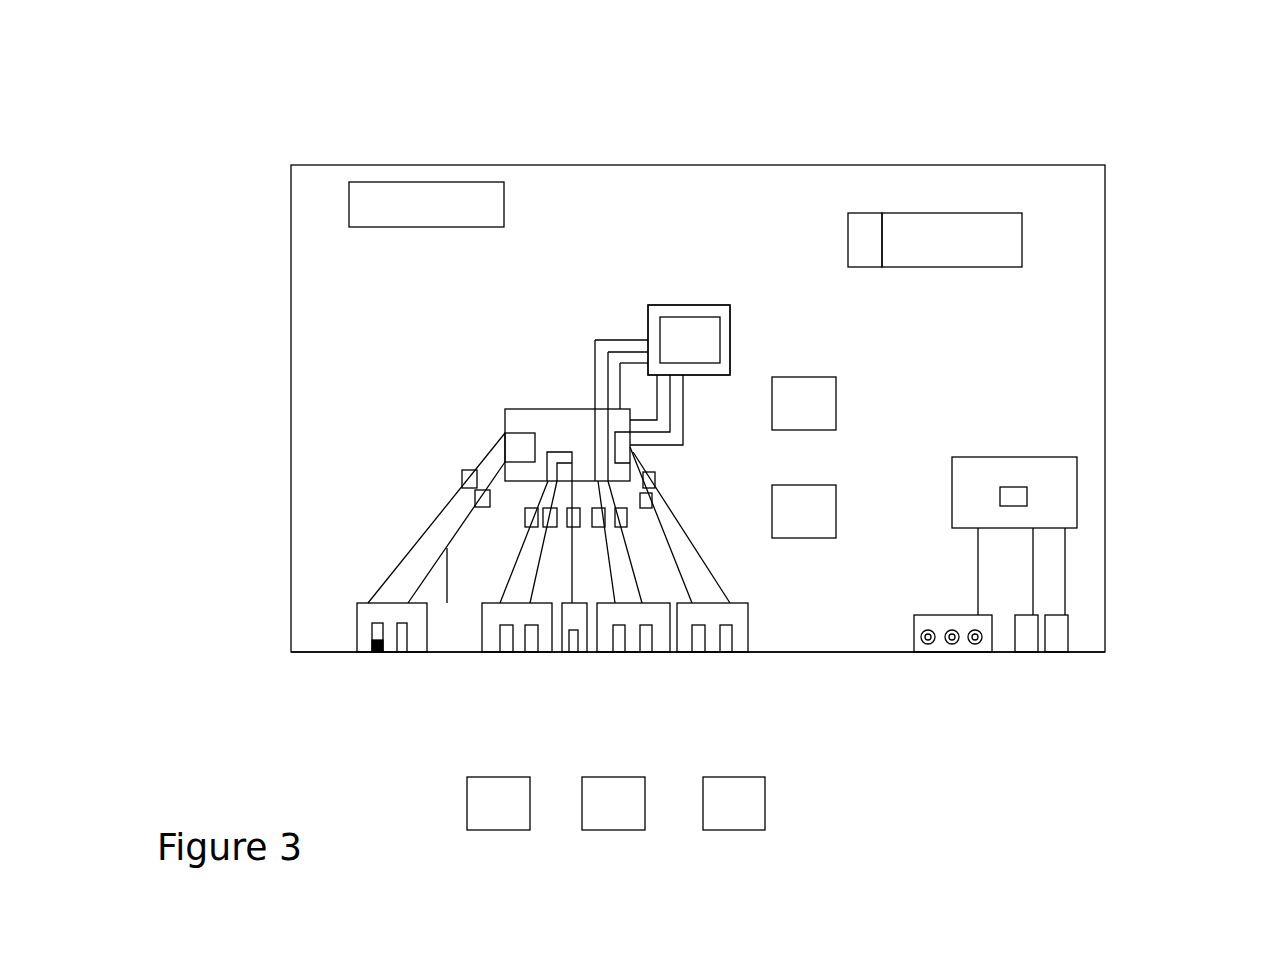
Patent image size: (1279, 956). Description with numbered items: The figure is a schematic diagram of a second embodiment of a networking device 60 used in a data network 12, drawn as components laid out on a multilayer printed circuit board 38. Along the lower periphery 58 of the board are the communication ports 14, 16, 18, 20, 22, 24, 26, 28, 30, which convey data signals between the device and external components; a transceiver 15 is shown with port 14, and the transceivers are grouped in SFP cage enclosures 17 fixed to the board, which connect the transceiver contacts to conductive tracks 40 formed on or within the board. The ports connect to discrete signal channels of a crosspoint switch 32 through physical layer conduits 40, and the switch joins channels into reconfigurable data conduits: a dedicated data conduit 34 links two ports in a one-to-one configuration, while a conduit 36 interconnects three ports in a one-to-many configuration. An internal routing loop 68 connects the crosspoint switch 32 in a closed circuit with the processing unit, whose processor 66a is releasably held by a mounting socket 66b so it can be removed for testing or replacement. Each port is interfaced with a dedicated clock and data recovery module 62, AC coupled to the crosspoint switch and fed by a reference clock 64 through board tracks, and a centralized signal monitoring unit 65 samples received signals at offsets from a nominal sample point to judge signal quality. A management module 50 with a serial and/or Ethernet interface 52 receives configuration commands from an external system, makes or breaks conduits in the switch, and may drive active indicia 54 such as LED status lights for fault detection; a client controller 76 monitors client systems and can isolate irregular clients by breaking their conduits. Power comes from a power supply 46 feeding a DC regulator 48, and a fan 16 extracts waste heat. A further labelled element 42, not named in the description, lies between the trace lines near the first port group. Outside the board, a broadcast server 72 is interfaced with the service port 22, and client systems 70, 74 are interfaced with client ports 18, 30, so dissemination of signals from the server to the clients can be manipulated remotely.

The data network 12 is at (1162, 152).
The networking device 60 is at (270, 140).
The multilayer printed circuit board 38 is at (1042, 165).
The fan 16 is at (390, 183).
The dedicated data conduit 34 is at (509, 437).
The crosspoint switch 32 is at (541, 403).
The conduit 36 is at (568, 452).
The internal routing loop 68 is at (623, 340).
The processor 66a is at (669, 317).
The mounting socket 66b is at (722, 305).
The DC regulator 48 is at (862, 213).
The power supply 46 is at (920, 213).
The reference clock 64 is at (804, 403).
The signal monitoring unit 65 is at (804, 511).
The management module 50 is at (1077, 457).
The client controller 76 is at (1018, 487).
The active indicia 54 is at (975, 652).
The serial and/or Ethernet interface 52 is at (1065, 652).
The periphery 58 is at (790, 652).
The physical layer conduits 40 is at (423, 533).
The trace gap 42 is at (447, 603).
The SFP cage enclosure 17 is at (358, 603).
The transceiver 15 is at (377, 643).
The communication port 14 is at (377, 652).
The client communications port 18 is at (507, 652).
The communication port 20 is at (531, 652).
The service port 22 is at (572, 652).
The communication port 24 is at (619, 652).
The communication port 26 is at (647, 652).
The communication port 28 is at (698, 652).
The client communications port 30 is at (726, 652).
The clock and data recovery module 62 is at (657, 478).
The client system 70 is at (498, 803).
The broadcast server 72 is at (613, 803).
The client system 74 is at (734, 803).